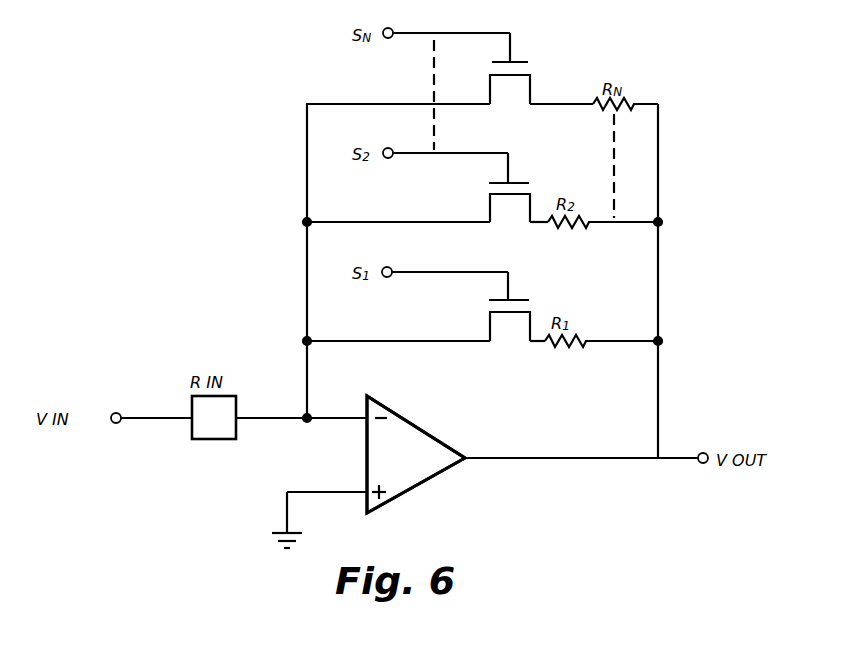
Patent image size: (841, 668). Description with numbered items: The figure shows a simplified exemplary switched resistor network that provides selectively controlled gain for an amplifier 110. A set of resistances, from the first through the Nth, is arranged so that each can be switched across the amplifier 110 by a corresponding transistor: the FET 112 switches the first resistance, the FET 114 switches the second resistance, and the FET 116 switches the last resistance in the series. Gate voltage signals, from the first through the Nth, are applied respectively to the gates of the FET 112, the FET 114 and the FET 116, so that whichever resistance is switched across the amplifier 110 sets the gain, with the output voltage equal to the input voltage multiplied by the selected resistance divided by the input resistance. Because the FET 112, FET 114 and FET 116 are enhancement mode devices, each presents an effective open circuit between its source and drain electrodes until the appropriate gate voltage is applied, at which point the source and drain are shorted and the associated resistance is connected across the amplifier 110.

The amplifier 110 is at (432, 434).
The FET 112 is at (532, 306).
The FET 114 is at (530, 189).
The FET 116 is at (535, 69).